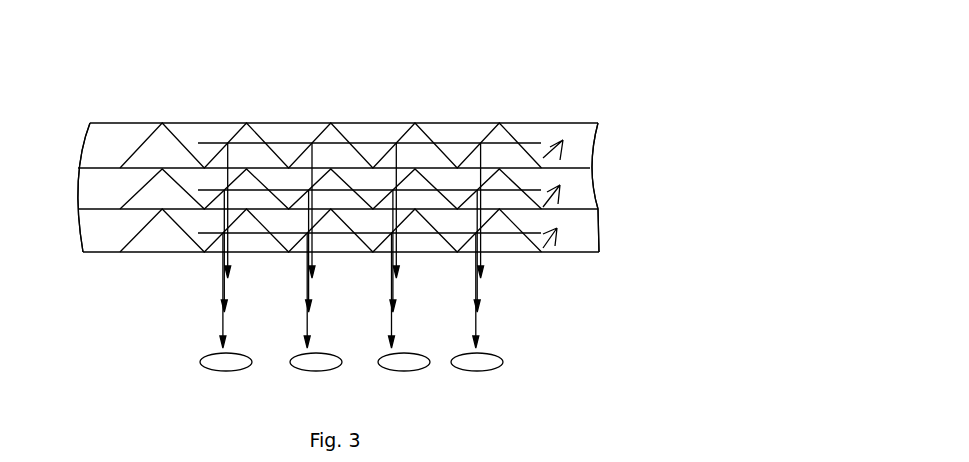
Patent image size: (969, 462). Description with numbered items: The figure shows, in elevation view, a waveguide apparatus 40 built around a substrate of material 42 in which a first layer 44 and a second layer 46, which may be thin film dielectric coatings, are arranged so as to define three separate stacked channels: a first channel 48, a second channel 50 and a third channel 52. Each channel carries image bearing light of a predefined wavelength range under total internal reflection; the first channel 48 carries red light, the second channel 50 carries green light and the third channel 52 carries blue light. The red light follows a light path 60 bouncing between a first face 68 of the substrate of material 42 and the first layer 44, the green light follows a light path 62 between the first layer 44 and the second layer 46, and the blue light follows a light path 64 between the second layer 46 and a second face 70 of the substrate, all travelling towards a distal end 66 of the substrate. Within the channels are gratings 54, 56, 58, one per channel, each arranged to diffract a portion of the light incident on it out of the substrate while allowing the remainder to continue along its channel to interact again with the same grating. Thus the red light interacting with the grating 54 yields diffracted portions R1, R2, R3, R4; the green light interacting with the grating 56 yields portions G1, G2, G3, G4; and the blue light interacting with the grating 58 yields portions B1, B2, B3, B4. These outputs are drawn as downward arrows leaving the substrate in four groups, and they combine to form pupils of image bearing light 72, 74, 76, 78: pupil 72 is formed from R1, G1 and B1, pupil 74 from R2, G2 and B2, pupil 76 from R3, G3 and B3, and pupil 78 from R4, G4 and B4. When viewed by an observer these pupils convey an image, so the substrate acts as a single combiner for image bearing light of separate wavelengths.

The waveguide apparatus 40 is at (618, 50).
The substrate of material 42 is at (112, 138).
The first layer 44 is at (78, 157).
The second layer 46 is at (92, 213).
The first channel 48 is at (577, 153).
The second channel 50 is at (573, 190).
The third channel 52 is at (592, 227).
The grating 54 is at (217, 143).
The grating 56 is at (185, 155).
The grating 58 is at (184, 251).
The light path 60 is at (520, 128).
The light path 62 is at (556, 190).
The light path 64 is at (556, 232).
The distal end 66 is at (600, 132).
The first face 68 is at (293, 125).
The second face 70 is at (96, 253).
The pupil of image bearing light 72 is at (217, 362).
The pupil of image bearing light 74 is at (307, 362).
The pupil of image bearing light 76 is at (407, 365).
The pupil of image bearing light 78 is at (475, 365).
The portion of red image bearing light R1 is at (229, 272).
The portion of green image bearing light G1 is at (226, 307).
The portion of blue image bearing light B1 is at (225, 343).
The portion of red image bearing light R2 is at (314, 272).
The portion of green image bearing light G2 is at (311, 307).
The portion of blue image bearing light B2 is at (310, 343).
The portion of red image bearing light R3 is at (398, 272).
The portion of green image bearing light G3 is at (395, 307).
The portion of blue image bearing light B3 is at (394, 343).
The portion of red image bearing light R4 is at (482, 272).
The portion of green image bearing light G4 is at (479, 307).
The portion of blue image bearing light B4 is at (478, 343).